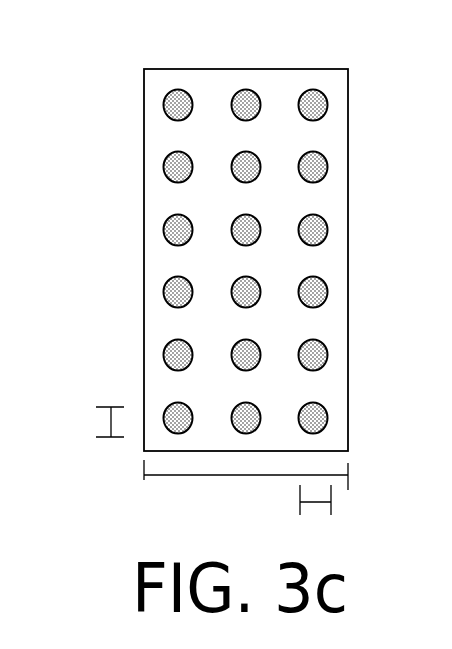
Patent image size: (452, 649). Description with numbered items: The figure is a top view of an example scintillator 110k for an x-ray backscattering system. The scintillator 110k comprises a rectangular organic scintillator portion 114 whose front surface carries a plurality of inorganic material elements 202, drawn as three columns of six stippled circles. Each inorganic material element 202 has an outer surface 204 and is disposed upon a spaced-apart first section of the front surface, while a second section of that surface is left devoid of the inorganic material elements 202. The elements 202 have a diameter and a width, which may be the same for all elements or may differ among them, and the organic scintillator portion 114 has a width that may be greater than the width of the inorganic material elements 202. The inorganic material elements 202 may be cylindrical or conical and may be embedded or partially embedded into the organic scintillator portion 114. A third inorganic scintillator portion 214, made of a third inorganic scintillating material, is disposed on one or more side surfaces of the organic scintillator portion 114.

The scintillator 110k is at (314, 52).
The organic scintillator portion 114 is at (173, 68).
The third inorganic scintillator portion 214 is at (154, 130).
The outer surfaces 204 is at (178, 418).
The inorganic material elements 202 is at (313, 418).